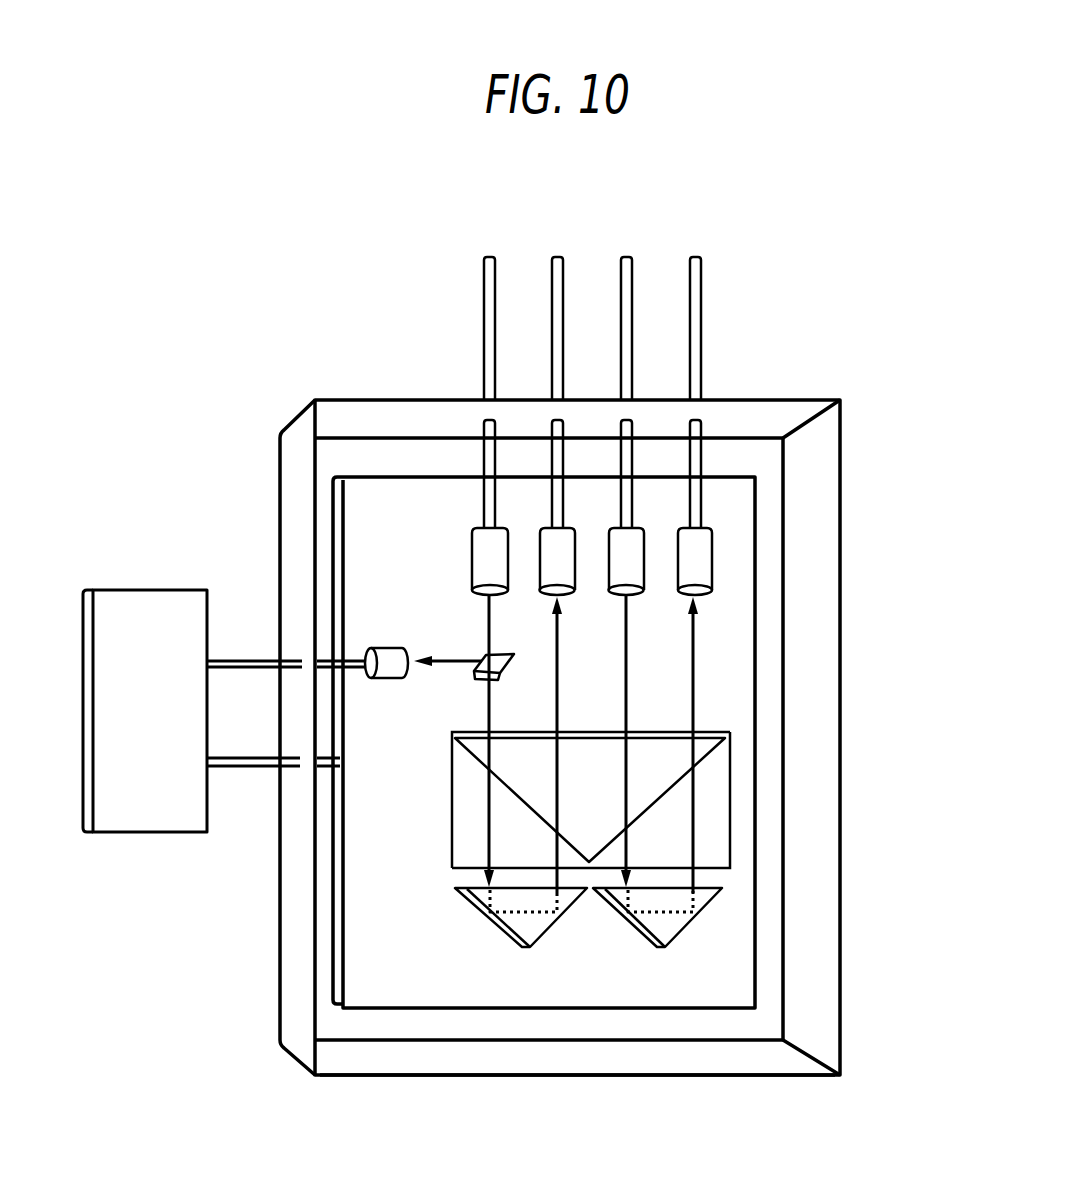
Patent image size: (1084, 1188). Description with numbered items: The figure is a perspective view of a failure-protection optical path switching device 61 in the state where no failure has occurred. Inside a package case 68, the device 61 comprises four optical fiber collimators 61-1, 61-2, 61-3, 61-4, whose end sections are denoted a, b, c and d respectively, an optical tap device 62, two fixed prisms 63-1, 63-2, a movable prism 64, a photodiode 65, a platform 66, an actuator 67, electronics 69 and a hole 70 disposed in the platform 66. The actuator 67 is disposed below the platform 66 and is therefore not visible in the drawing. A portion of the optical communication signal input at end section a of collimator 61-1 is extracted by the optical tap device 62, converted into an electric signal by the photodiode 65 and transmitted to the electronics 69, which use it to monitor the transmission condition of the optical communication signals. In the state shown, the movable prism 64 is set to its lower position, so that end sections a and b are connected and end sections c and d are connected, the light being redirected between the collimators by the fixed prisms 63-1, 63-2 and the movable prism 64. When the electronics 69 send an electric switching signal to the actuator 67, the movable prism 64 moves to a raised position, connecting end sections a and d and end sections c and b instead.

The failure-protection optical path switching device 61 is at (342, 375).
The optical fiber collimator 61-1 is at (490, 258).
The optical fiber collimator 61-2 is at (558, 258).
The optical fiber collimator 61-3 is at (627, 258).
The optical fiber collimator 61-4 is at (696, 258).
The optical tap device 62 is at (470, 677).
The fixed prism 63-1 is at (523, 932).
The fixed prism 63-2 is at (660, 922).
The movable prism 64 is at (680, 752).
The photodiode 65 is at (390, 648).
The platform 66 is at (370, 990).
The actuator 67 is at (467, 770).
The package case 68 is at (494, 1078).
The electronics 69 is at (146, 825).
The hole 70 is at (713, 855).